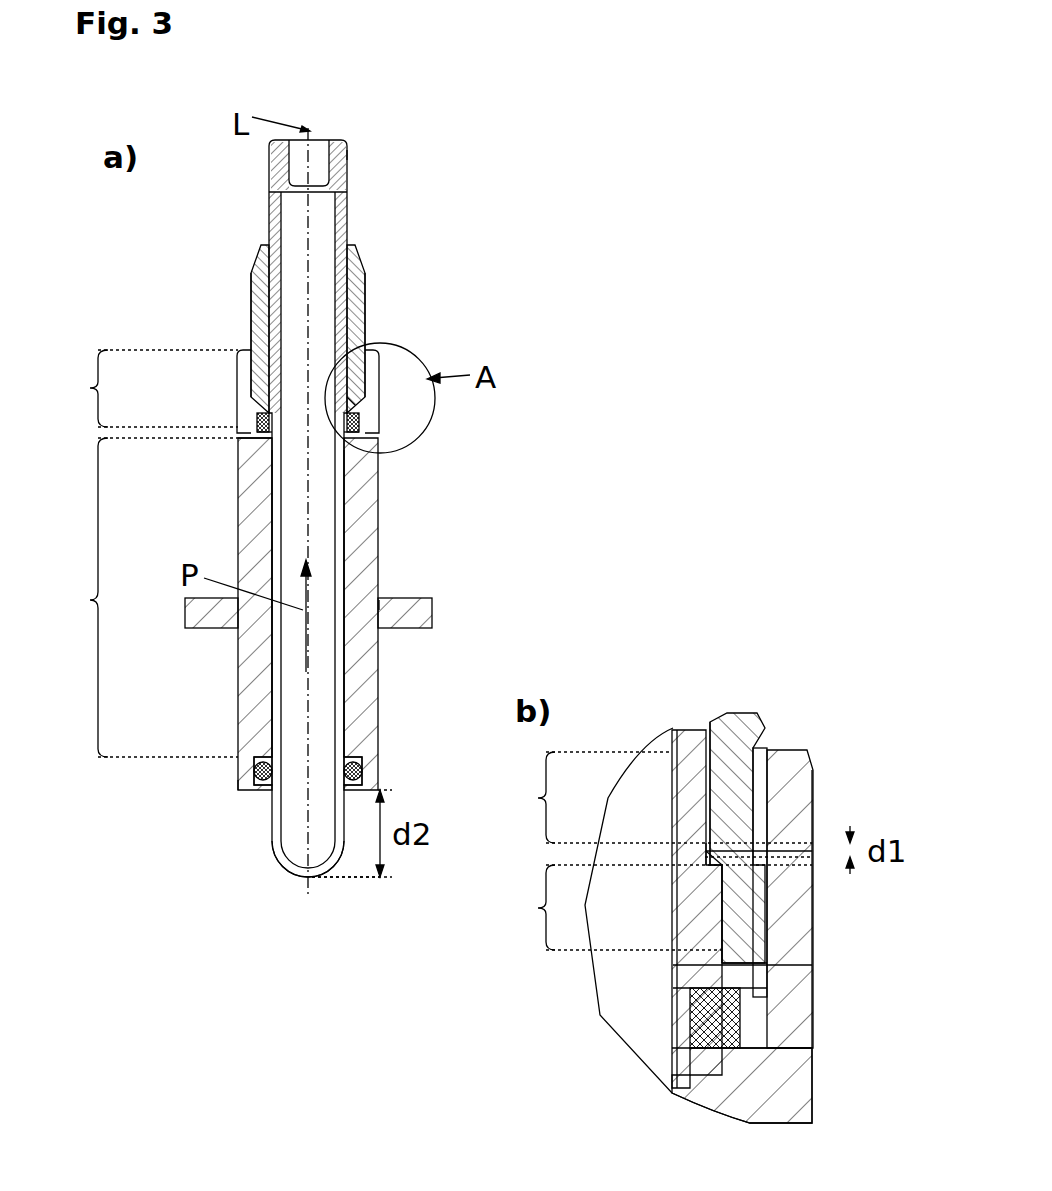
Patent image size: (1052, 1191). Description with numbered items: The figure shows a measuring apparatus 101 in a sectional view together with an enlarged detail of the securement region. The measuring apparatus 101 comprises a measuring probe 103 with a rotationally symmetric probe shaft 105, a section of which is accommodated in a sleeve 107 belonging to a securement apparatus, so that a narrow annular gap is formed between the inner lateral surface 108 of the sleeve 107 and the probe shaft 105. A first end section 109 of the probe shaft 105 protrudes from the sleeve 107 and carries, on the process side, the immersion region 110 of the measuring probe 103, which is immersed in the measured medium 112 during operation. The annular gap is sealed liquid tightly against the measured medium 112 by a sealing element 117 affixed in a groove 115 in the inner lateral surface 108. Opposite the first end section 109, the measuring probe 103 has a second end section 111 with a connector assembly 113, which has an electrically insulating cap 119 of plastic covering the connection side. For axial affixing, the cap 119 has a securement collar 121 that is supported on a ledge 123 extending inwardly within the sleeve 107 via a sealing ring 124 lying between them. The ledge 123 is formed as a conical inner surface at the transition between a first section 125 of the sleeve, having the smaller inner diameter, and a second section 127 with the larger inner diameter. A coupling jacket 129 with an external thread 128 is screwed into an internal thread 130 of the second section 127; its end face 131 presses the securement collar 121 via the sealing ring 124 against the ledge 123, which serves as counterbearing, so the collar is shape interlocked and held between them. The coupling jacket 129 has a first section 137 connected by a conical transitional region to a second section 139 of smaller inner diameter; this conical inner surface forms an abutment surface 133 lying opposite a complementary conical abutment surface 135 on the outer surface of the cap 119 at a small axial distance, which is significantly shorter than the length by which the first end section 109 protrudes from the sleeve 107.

The measuring apparatus 101 is at (618, 283).
The measuring probe 103 is at (290, 732).
The probe shaft 105 is at (330, 548).
The sleeve 107 is at (358, 503).
The inner lateral surface 108 is at (345, 657).
The first end section 109 is at (190, 888).
The immersion region 110 is at (315, 850).
The second end section 111 is at (412, 192).
The measured medium 112 is at (385, 941).
The connector assembly 113 is at (300, 165).
The groove 115 is at (357, 764).
The sealing element 117 is at (258, 770).
The electrically insulating cap 119 is at (268, 218).
The securement collar 121 is at (352, 410).
The ledge 123 is at (258, 436).
The sealing ring 124 is at (357, 428).
The first section of the sleeve 125 is at (133, 597).
The second section of the sleeve 127 is at (134, 388).
The external thread 128 is at (256, 342).
The coupling jacket 129 is at (360, 275).
The internal thread 130 is at (246, 360).
The end face 131 is at (355, 395).
The abutment surface 133 is at (712, 850).
The complementary abutment surface 135 is at (712, 855).
The first section of the coupling jacket 137 is at (645, 903).
The second section of the coupling jacket 139 is at (646, 797).